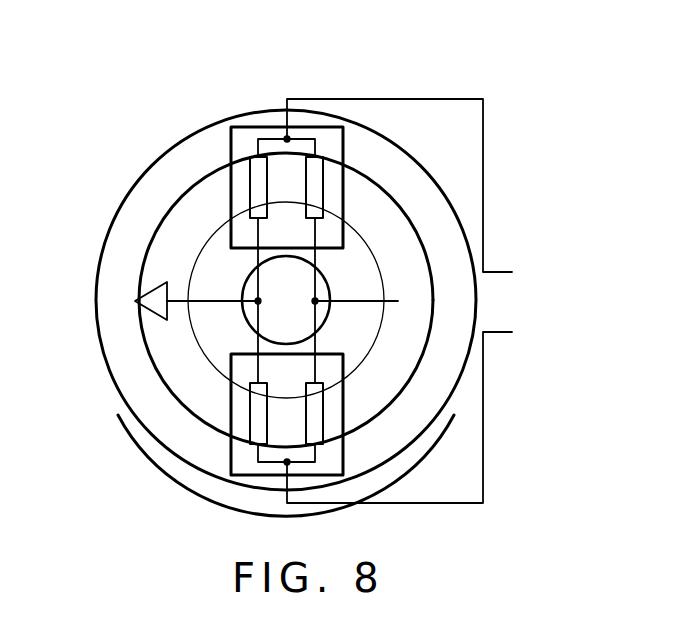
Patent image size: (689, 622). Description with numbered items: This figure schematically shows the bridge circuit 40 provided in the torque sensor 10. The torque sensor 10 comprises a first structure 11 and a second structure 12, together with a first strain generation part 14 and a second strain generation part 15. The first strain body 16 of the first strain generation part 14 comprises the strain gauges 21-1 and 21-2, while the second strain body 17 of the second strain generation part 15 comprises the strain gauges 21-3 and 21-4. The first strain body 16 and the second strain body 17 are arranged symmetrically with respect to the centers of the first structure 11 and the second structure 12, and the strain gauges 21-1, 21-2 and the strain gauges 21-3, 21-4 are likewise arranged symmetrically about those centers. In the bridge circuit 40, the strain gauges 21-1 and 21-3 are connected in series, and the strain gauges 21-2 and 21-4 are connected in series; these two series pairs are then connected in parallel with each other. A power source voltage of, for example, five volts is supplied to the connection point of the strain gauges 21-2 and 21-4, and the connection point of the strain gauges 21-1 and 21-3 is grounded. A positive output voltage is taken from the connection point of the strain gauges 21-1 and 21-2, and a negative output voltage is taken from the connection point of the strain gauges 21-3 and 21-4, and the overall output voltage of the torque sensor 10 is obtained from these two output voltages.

The torque sensor 10 is at (191, 116).
The first structure 11 is at (157, 177).
The second structure 12 is at (208, 270).
The first strain generation part 14 is at (358, 148).
The second strain generation part 15 is at (356, 414).
The first strain body 16 is at (345, 188).
The second strain body 17 is at (228, 448).
The strain gauge 21-1 is at (253, 193).
The strain gauge 21-2 is at (317, 202).
The strain gauge 21-3 is at (258, 410).
The strain gauge 21-4 is at (317, 408).
The bridge circuit 40 is at (337, 90).